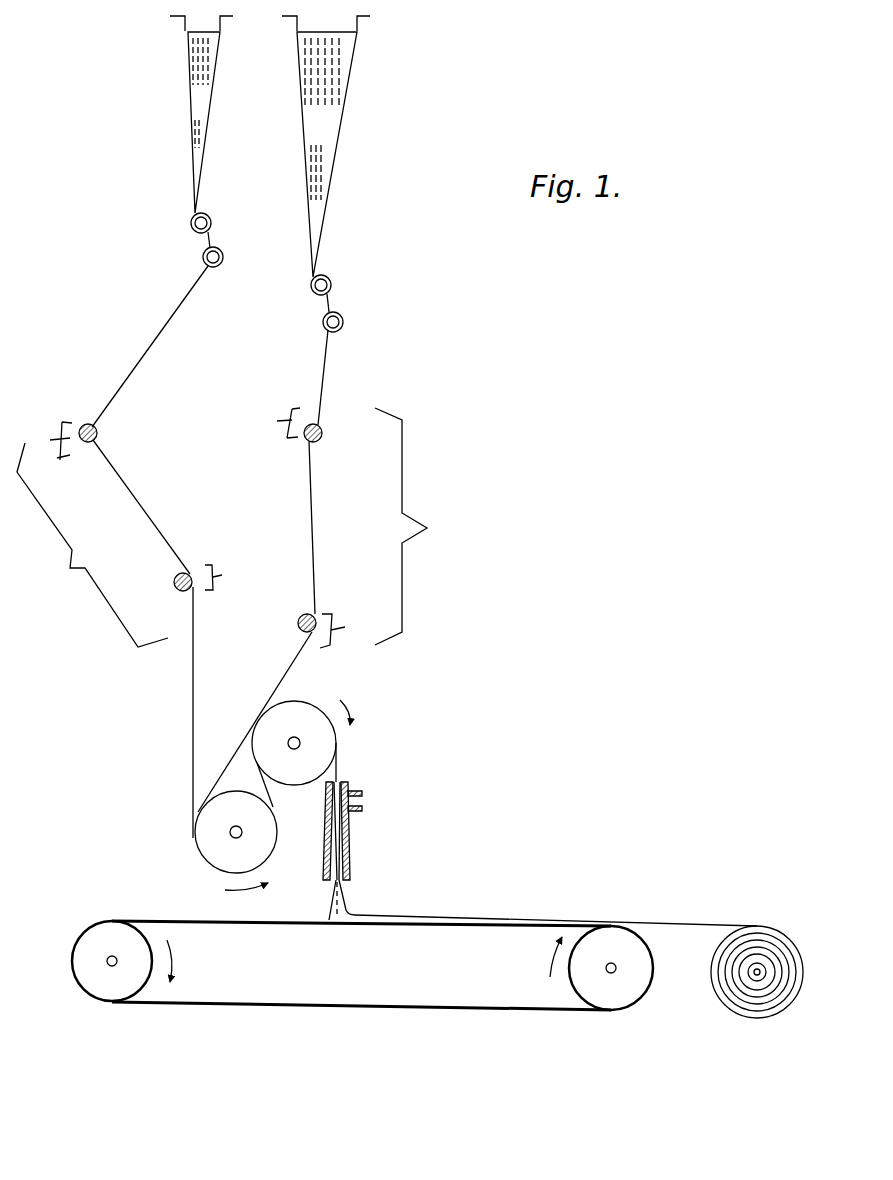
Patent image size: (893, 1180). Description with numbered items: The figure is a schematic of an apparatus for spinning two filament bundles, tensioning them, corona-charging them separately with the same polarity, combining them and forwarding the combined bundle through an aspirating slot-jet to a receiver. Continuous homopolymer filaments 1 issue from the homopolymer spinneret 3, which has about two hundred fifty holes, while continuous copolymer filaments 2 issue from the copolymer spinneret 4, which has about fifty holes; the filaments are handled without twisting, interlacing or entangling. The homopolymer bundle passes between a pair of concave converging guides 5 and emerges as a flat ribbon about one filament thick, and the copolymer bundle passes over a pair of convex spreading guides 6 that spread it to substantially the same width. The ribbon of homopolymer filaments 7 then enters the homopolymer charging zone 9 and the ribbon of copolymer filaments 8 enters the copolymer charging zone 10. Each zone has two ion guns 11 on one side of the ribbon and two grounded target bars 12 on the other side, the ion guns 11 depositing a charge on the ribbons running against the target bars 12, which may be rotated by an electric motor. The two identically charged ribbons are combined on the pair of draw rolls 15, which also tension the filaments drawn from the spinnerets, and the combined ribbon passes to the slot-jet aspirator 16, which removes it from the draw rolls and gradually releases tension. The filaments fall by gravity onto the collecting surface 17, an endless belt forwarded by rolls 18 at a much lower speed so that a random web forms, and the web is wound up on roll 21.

The continuous homopolymer filaments 1 is at (330, 125).
The continuous copolymer filaments 2 is at (197, 112).
The homopolymer spinneret 3 is at (348, 30).
The copolymer spinneret 4 is at (195, 25).
The concave converging guides 5 is at (342, 318).
The convex spreading guides 6 is at (202, 252).
The bundle of homopolymer filaments 7 is at (327, 372).
The bundle of copolymer filaments 8 is at (137, 355).
The homopolymer charging zone 9 is at (430, 528).
The copolymer charging zone 10 is at (65, 577).
The ion gun 11 is at (60, 456).
The grounded target bar 12 is at (98, 437).
The draw rolls 15 is at (312, 707).
The slot-jet aspirator 16 is at (352, 877).
The collecting surface 17 is at (157, 902).
The rolls 18 is at (110, 995).
The roll 21 is at (763, 930).